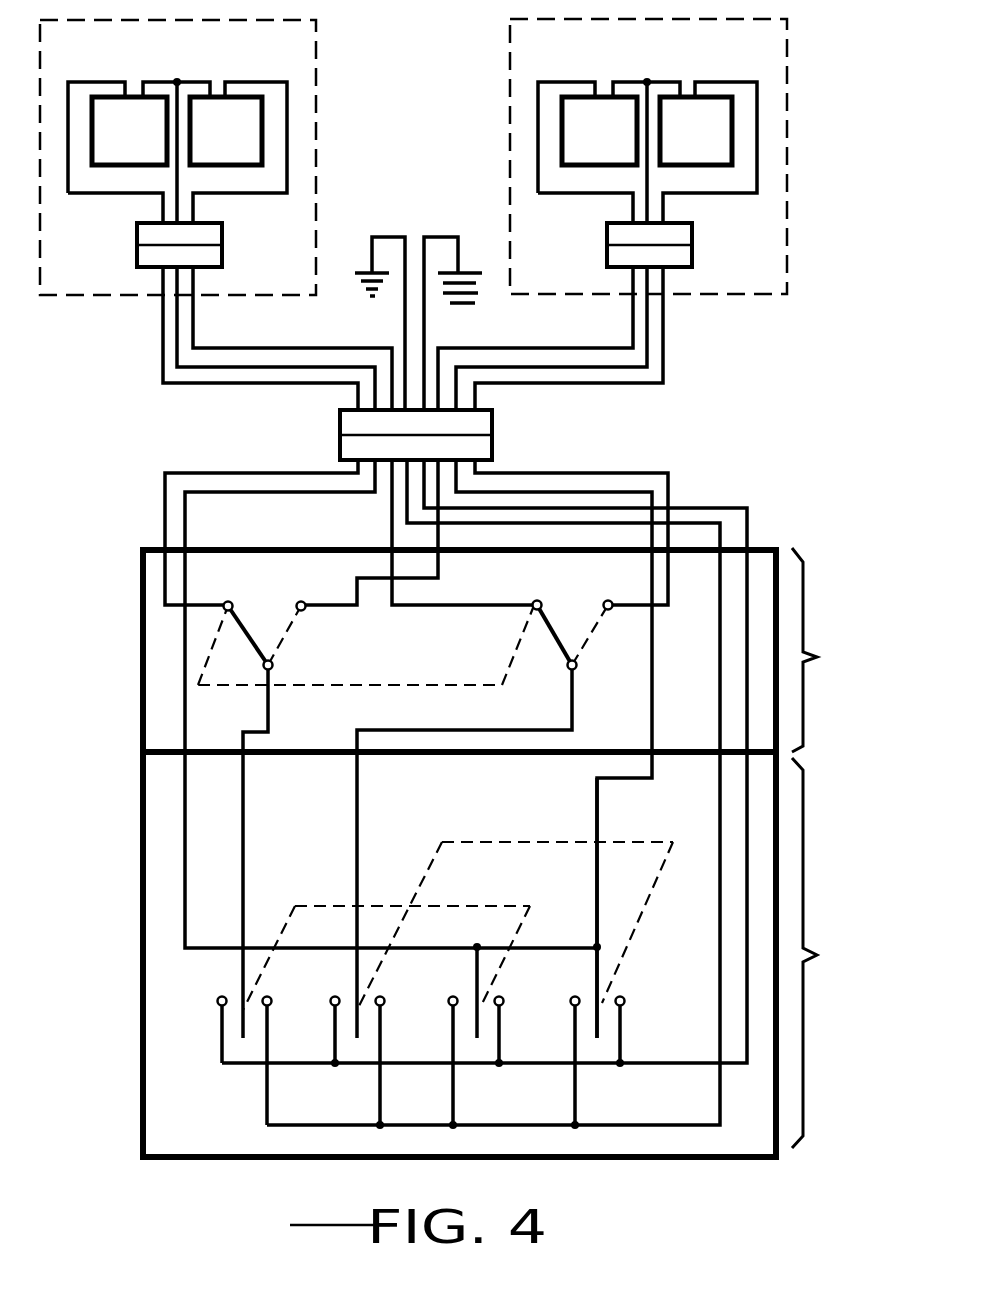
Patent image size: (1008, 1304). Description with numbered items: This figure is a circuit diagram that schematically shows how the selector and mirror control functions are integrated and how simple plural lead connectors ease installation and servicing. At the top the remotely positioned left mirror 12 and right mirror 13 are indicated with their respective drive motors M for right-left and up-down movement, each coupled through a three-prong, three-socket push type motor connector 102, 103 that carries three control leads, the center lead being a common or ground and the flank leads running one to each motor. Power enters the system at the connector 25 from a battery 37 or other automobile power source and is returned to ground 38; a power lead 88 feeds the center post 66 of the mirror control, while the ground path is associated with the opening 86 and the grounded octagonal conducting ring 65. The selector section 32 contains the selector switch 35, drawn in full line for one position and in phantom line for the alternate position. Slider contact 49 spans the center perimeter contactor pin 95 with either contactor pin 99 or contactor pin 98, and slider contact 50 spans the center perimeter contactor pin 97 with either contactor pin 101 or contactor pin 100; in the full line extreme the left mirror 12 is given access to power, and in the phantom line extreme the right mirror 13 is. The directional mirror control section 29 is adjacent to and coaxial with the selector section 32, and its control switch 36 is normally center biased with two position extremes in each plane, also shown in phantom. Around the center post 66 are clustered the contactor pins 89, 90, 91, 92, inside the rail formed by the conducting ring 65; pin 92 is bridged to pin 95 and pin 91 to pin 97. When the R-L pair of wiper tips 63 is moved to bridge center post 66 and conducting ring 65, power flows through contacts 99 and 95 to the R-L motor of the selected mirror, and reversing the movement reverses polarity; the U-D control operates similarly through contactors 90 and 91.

The left mirror 12 is at (200, 160).
The right mirror 13 is at (670, 159).
The motor connector 102 is at (222, 254).
The motor connector 103 is at (692, 249).
The ground 38 is at (368, 285).
The battery 37 is at (478, 297).
The connector 25 is at (492, 447).
The power lead 88 is at (738, 507).
The opening 86 is at (583, 524).
The selector section 32 is at (522, 650).
The contactor pin 99 is at (232, 600).
The contactor pin 98 is at (303, 601).
The slider contact 49 is at (262, 623).
The perimeter contactor pin 95 is at (263, 667).
The contactor pin 101 is at (535, 600).
The contactor pin 100 is at (609, 600).
The slider contact 50 is at (556, 630).
The contactor pin 97 is at (567, 671).
The selector switch 35 is at (368, 692).
The control switch 36 is at (441, 824).
The wiper tips 63 is at (289, 935).
The contactor pin 89 is at (240, 1030).
The contactor pin 91 is at (354, 1030).
The contactor pin 92 is at (480, 1030).
The contactor pin 90 is at (594, 1030).
The center post 66 is at (657, 1065).
The octagonal conducting ring 65 is at (512, 1129).
The directional mirror control section 29 is at (525, 954).